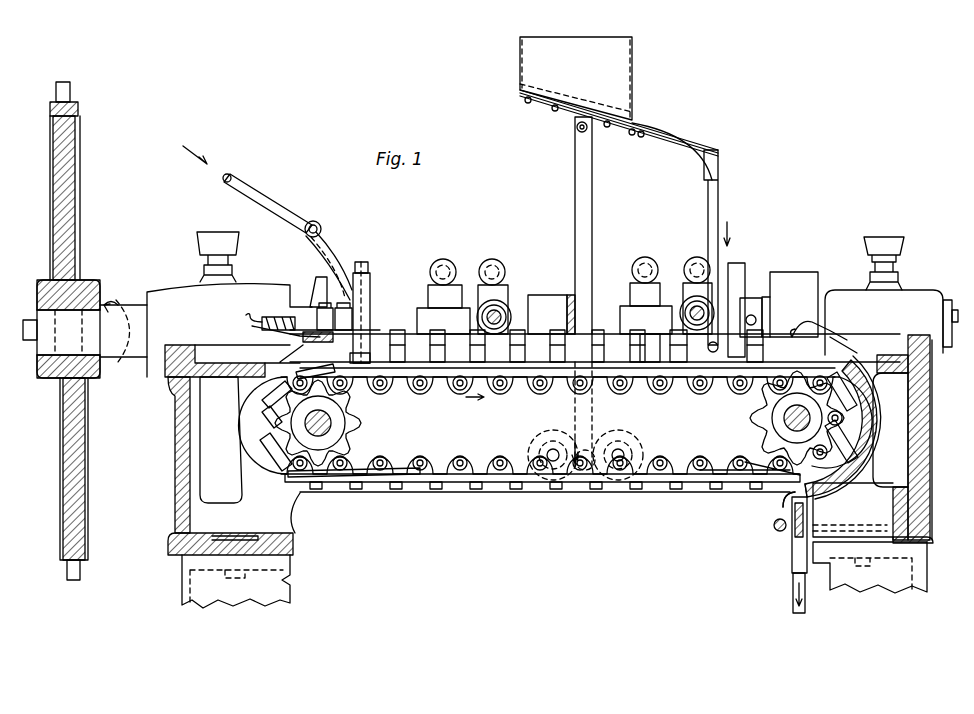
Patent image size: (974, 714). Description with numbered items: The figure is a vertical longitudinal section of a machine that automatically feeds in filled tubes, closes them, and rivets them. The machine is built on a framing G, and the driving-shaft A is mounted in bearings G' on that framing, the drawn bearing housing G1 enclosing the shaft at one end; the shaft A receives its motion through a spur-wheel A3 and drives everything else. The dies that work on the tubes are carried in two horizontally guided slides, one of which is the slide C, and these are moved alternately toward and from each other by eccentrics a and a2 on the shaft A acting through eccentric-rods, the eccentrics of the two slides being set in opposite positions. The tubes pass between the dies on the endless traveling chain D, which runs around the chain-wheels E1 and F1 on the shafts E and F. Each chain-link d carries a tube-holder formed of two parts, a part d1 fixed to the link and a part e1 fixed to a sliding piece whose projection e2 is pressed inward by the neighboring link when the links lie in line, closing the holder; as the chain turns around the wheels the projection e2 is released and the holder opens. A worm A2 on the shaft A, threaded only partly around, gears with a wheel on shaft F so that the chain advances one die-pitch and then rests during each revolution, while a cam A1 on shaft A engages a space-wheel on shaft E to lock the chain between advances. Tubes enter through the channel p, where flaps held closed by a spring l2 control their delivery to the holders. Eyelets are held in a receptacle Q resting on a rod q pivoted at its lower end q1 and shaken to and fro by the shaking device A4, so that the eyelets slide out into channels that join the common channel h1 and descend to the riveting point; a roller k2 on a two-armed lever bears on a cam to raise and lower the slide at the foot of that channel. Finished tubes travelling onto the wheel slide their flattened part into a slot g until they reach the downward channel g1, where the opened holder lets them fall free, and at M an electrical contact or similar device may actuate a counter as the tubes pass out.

The driving-shaft A is at (120, 347).
The cam A1 is at (330, 250).
The worm A2 is at (793, 279).
The spur-wheel A3 is at (80, 217).
The shaking device A4 is at (535, 300).
The receptacle Q is at (620, 83).
The rod q is at (590, 218).
The lower end pivot of rod q1 is at (593, 462).
The slot g is at (872, 441).
The channel g1 is at (797, 548).
The common channel h1 is at (720, 214).
The roller k2 is at (746, 268).
The eccentric a is at (427, 295).
The eccentric a2 is at (499, 284).
The channel p is at (353, 255).
The spring l2 is at (272, 318).
The framing G is at (550, 471).
The left housing G1 is at (161, 293).
The bearing G' is at (891, 296).
The electrical contact M is at (830, 330).
The block b is at (402, 349).
The tube-holder part e1 is at (263, 409).
The projection e2 is at (266, 433).
The chain-link d is at (392, 468).
The tube-holder part d1 is at (268, 390).
The endless traveling chain D is at (555, 422).
The slide C is at (657, 348).
The shaft E is at (341, 423).
The chain-wheel E1 is at (352, 409).
The shaft F is at (782, 418).
The chain-wheel F1 is at (765, 393).